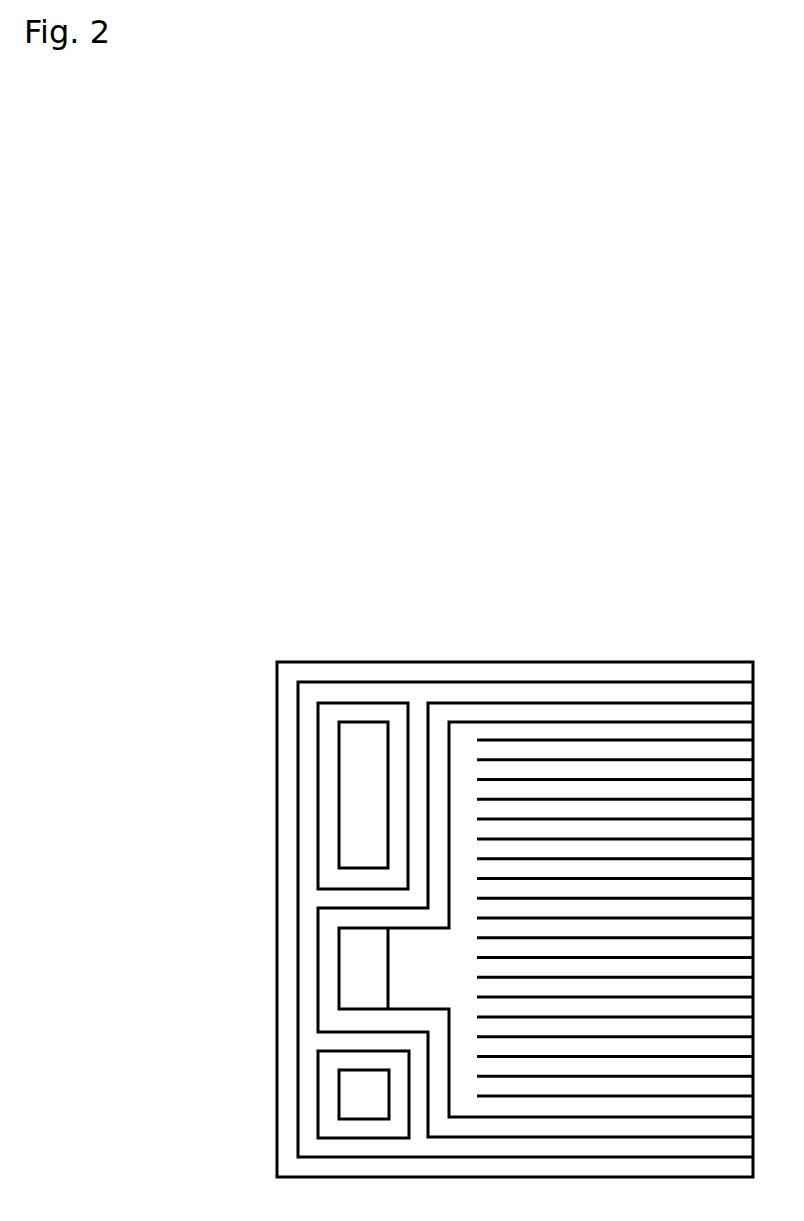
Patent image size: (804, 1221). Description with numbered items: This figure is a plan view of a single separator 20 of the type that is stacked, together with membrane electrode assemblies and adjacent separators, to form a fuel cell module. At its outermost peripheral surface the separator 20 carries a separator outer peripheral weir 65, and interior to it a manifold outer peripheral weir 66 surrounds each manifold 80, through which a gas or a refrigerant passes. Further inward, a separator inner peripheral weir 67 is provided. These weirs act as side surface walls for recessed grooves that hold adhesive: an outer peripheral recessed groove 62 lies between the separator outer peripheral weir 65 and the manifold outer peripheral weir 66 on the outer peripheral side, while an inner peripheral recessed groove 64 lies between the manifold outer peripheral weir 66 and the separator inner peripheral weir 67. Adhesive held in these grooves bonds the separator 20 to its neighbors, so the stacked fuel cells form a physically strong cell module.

The separator 20 is at (556, 564).
The outer peripheral recessed groove 62 is at (307, 750).
The inner peripheral recessed groove 64 is at (417, 717).
The separator outer peripheral weir 65 is at (285, 700).
The manifold outer peripheral weir 66 is at (390, 712).
The separator inner peripheral weir 67 is at (458, 710).
The manifold 80 is at (363, 747).